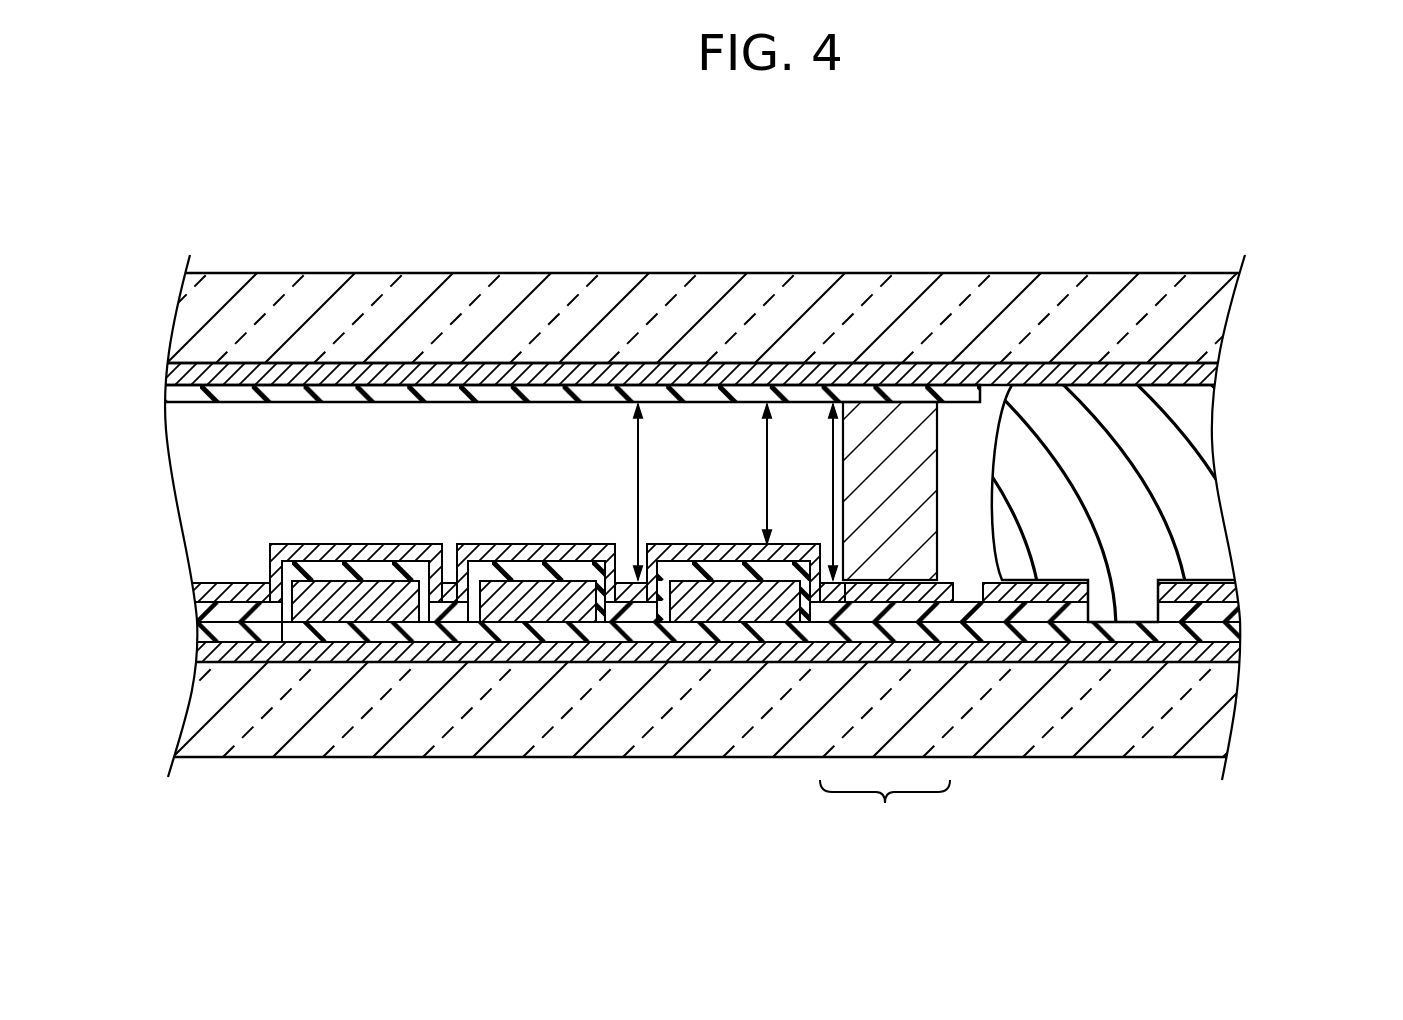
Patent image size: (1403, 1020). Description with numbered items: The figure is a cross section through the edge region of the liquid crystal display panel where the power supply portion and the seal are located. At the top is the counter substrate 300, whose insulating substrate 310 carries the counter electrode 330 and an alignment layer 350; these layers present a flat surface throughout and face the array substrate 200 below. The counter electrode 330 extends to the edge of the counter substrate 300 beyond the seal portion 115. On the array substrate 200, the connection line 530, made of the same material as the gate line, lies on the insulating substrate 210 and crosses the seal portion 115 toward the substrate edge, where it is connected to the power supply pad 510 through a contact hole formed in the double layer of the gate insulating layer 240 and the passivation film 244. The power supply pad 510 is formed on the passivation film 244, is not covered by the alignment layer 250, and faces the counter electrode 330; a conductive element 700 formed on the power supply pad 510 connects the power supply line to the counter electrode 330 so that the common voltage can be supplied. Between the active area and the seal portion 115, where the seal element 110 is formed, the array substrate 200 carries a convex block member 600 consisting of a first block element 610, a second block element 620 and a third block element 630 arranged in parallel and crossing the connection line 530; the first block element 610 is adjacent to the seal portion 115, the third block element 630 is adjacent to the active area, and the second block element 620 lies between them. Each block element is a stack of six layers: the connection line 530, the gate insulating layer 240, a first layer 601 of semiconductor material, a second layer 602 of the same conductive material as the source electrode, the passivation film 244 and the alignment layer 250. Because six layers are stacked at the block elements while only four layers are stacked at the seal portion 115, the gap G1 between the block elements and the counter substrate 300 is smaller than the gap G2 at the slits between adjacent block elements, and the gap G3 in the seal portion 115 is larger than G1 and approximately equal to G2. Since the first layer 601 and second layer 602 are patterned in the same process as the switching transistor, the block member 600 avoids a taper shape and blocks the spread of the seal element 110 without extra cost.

The counter substrate 300 is at (731, 324).
The insulating substrate 310 is at (183, 322).
The counter electrode 330 is at (165, 381).
The alignment layer 350 is at (167, 395).
The seal element 110 is at (905, 435).
The conductive element 700 is at (1212, 497).
The gap between block elements and counter substrate G1 is at (747, 452).
The gap between slits and counter substrate G2 is at (624, 470).
The gap between substrates in seal portion G3 is at (815, 472).
The array substrate 200 is at (716, 673).
The insulating substrate 210 is at (1225, 718).
The connection line 530 is at (198, 652).
The gate insulating layer 240 is at (197, 630).
The passivation film 244 is at (197, 612).
The alignment layer 250 is at (210, 580).
The power supply pad 510 is at (1237, 582).
The block member 600 is at (545, 673).
The first block element 610 is at (718, 642).
The second block element 620 is at (524, 642).
The third block element 630 is at (328, 642).
The first layer 601 is at (348, 600).
The second layer 602 is at (343, 585).
The seal portion 115 is at (885, 812).